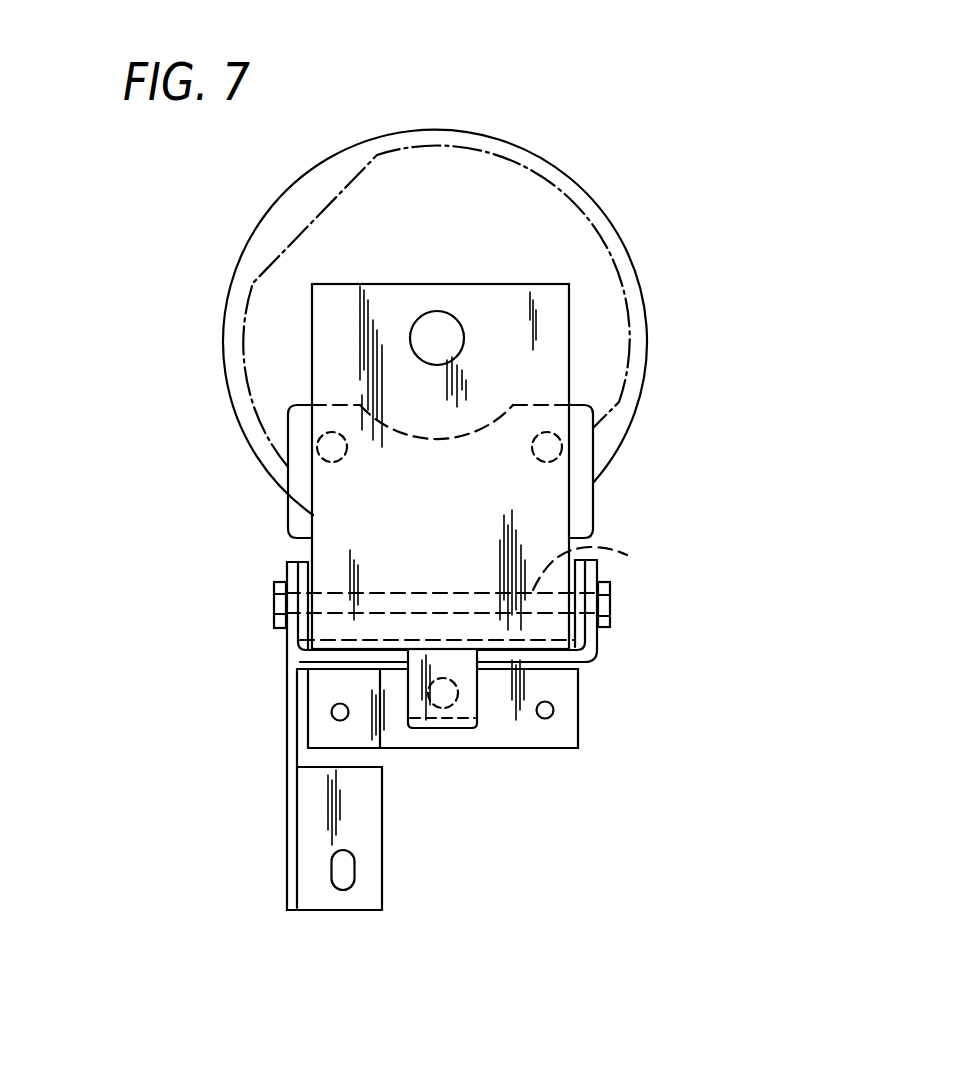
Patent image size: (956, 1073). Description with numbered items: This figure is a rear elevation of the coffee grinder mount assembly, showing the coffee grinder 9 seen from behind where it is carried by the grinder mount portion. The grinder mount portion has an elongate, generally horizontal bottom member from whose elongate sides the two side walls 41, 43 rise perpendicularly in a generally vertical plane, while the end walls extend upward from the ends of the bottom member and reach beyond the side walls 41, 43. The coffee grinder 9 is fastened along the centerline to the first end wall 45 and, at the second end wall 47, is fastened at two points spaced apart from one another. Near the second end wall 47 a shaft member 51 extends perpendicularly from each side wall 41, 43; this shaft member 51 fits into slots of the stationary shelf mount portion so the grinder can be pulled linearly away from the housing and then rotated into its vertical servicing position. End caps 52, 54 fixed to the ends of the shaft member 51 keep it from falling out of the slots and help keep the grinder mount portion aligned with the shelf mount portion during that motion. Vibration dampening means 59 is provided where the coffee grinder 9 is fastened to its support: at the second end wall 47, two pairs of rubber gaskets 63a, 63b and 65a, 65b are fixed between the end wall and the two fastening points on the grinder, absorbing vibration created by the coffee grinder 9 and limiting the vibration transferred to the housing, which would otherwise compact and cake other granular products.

The coffee grinder 9 is at (632, 246).
The side wall 41 is at (600, 655).
The side wall 43 is at (285, 562).
The first end wall 45 is at (397, 295).
The second end wall 47 is at (296, 436).
The shaft member 51 is at (596, 566).
The end cap 52 is at (610, 606).
The end cap 54 is at (274, 619).
The vibration dampening means 59 is at (445, 312).
The rubber gasket 63a is at (659, 468).
The rubber gasket 63b is at (593, 478).
The rubber gasket 65a is at (232, 494).
The rubber gasket 65b is at (290, 490).